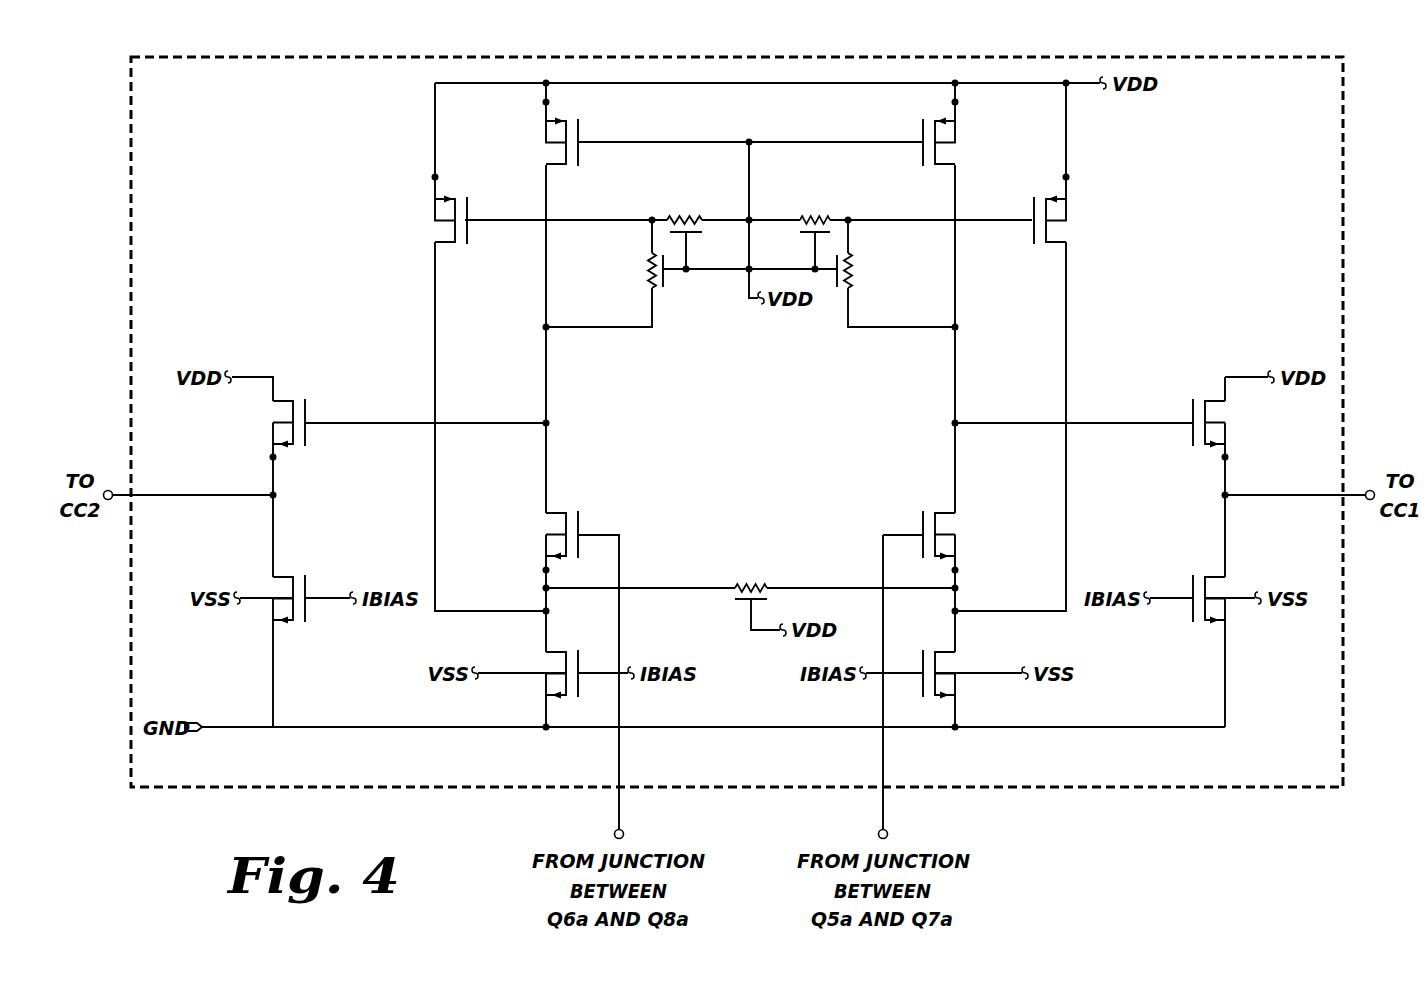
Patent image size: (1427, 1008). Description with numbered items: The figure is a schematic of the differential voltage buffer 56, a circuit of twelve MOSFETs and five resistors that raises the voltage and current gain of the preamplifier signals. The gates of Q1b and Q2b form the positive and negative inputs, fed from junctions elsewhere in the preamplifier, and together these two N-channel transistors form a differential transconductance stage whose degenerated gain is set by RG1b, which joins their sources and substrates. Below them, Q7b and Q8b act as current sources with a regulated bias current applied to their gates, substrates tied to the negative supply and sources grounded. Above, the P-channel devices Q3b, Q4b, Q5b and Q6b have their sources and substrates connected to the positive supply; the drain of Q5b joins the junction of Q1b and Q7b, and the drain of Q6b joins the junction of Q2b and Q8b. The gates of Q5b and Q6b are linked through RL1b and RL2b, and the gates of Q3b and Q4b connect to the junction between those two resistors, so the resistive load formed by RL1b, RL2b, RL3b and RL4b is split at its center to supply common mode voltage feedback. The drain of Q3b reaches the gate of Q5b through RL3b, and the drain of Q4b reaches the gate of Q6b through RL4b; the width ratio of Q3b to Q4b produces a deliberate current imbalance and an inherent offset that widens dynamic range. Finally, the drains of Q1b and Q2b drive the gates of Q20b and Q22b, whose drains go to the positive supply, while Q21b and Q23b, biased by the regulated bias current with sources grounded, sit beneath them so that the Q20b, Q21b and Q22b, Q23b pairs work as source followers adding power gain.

The differential voltage buffer 56 is at (1083, 789).
The N-channel MOSFET Q1b is at (587, 530).
The N-channel MOSFET Q2b is at (917, 530).
The P-channel MOSFET Q3b is at (541, 142).
The P-channel MOSFET Q4b is at (964, 142).
The P-channel MOSFET Q5b is at (476, 225).
The P-channel MOSFET Q6b is at (1075, 220).
The N-channel MOSFET Q7b is at (583, 661).
The N-channel MOSFET Q8b is at (963, 677).
The N-channel MOSFET Q20b is at (320, 425).
The N-channel MOSFET Q21b is at (320, 607).
The N-channel MOSFET Q22b is at (1184, 425).
The N-channel MOSFET Q23b is at (1185, 607).
The resistor RL1b is at (687, 206).
The resistor RL2b is at (815, 206).
The resistor RL3b is at (626, 270).
The resistor RL4b is at (877, 270).
The resistor RG1b is at (752, 575).